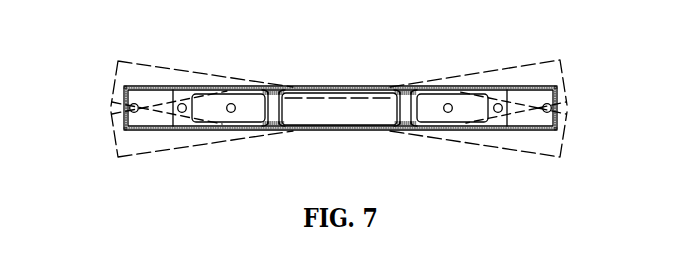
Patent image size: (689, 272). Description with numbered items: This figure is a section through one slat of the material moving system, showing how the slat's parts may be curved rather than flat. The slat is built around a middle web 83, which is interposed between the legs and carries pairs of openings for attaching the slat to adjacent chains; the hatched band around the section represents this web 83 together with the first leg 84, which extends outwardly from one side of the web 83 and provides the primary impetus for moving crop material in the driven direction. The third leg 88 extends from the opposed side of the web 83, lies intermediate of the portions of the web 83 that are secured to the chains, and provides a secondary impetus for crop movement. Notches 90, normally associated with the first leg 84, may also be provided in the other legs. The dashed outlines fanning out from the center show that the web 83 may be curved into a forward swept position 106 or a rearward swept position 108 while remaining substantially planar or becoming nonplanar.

The web 83 is at (117, 115).
The first leg 84 is at (531, 132).
The third leg 88 is at (304, 92).
The notches 90 is at (560, 113).
The forward swept position 106 is at (530, 150).
The rearward swept position 108 is at (523, 64).